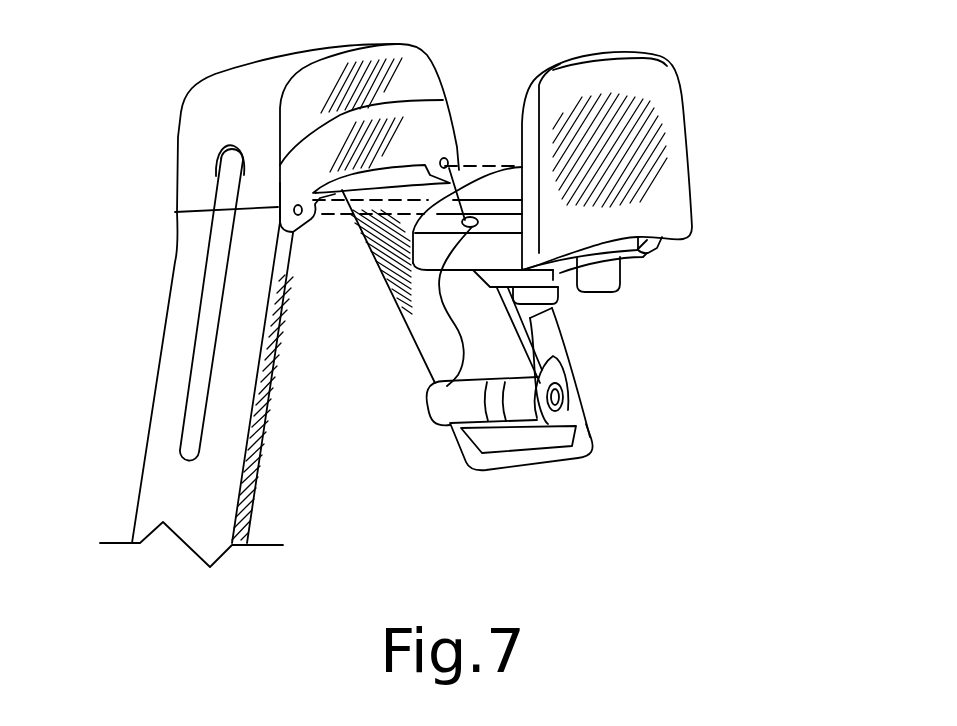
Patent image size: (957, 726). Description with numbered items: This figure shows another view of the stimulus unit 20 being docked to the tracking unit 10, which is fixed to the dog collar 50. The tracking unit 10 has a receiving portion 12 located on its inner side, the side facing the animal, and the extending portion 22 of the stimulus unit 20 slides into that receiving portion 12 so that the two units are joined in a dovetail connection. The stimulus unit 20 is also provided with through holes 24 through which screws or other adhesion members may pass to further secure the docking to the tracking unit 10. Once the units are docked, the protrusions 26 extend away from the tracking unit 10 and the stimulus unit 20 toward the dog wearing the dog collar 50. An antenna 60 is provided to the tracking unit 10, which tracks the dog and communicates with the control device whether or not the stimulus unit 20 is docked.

The tracking unit 10 is at (420, 54).
The receiving portion 12 is at (324, 199).
The stimulus unit 20 is at (670, 115).
The extending portion 22 is at (505, 185).
The through holes 24 is at (445, 388).
The protrusions 26 is at (553, 304).
The dog collar 50 is at (270, 420).
The antenna 60 is at (217, 268).